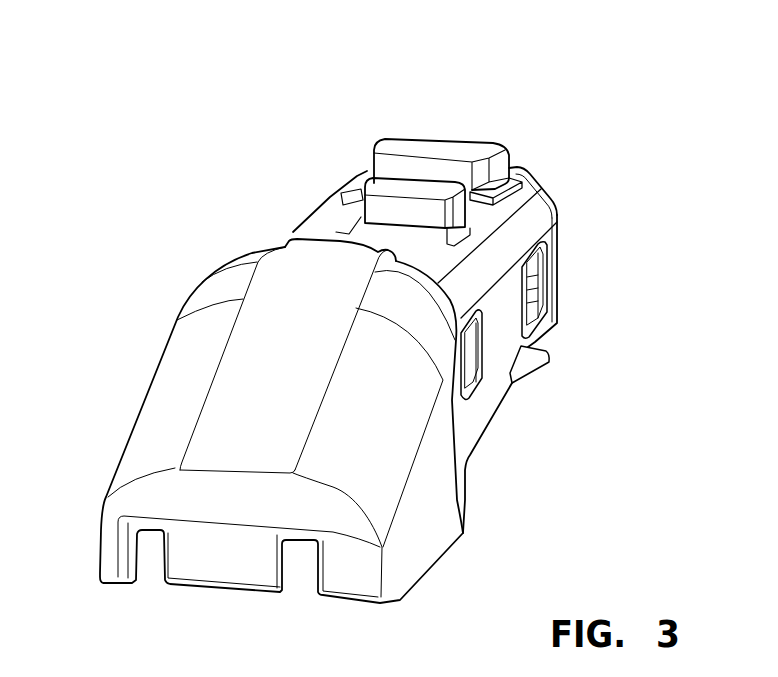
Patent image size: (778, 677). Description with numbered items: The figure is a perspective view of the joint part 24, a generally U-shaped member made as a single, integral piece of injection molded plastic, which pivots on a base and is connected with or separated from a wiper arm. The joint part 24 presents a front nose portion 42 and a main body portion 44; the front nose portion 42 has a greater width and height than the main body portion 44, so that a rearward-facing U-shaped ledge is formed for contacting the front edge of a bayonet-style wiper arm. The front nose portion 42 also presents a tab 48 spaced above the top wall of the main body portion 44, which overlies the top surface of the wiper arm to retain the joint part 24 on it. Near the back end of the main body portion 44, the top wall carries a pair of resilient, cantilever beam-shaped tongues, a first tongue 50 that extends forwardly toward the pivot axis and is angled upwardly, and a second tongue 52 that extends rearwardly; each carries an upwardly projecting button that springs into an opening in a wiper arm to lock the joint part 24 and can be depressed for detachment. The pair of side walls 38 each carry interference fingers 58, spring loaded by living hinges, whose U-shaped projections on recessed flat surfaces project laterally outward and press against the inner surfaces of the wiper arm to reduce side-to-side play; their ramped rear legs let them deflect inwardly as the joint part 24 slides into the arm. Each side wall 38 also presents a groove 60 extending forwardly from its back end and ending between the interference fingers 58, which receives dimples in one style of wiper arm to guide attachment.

The joint part 24 is at (127, 273).
The side walls 38 is at (508, 350).
The front nose portion 42 is at (160, 447).
The main body portion 44 is at (558, 458).
The tab 48 is at (310, 248).
The first tongue 50 is at (458, 146).
The second tongue 52 is at (393, 179).
The interference fingers 58 is at (543, 292).
The groove 60 is at (543, 343).